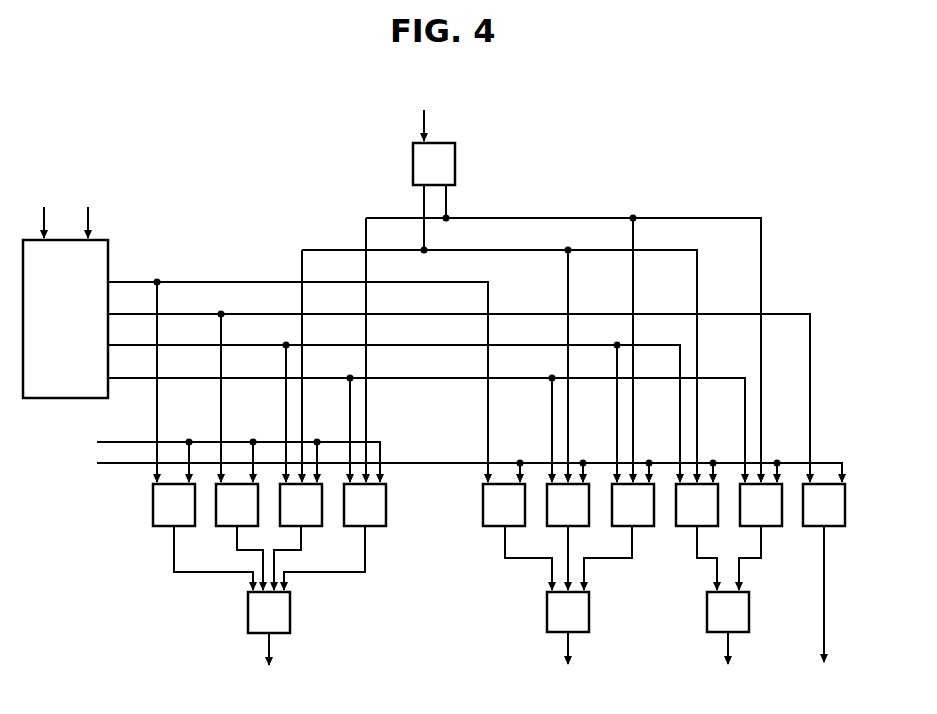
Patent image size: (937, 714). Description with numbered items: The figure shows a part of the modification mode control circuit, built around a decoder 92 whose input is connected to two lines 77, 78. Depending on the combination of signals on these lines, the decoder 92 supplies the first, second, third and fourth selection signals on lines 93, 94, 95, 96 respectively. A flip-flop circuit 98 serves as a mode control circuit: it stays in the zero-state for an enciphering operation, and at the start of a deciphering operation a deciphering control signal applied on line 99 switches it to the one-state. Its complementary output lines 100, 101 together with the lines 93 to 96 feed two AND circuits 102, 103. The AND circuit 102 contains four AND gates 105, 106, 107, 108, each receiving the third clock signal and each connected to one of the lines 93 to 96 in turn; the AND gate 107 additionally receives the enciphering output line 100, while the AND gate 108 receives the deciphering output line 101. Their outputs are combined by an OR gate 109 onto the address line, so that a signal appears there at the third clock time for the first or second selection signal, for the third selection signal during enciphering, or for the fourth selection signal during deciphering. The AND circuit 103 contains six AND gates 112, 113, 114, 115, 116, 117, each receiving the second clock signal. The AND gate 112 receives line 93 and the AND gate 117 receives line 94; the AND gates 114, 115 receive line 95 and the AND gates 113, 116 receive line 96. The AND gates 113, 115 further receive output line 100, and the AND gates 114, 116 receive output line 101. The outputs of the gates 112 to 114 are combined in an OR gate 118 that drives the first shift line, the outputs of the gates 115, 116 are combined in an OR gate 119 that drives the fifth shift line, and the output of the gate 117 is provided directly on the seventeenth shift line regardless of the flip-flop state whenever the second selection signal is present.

The line 77 is at (90, 216).
The line 78 is at (54, 212).
The decoder 92 is at (53, 399).
The line 93 is at (176, 285).
The line 94 is at (176, 317).
The line 95 is at (176, 349).
The line 96 is at (176, 381).
The flip-flop circuit 98 is at (456, 171).
The line 99 is at (426, 127).
The output line 100 is at (343, 249).
The output line 101 is at (519, 223).
The AND circuit 102 is at (138, 508).
The AND circuit 103 is at (850, 493).
The AND gate 105 is at (157, 527).
The AND gate 106 is at (228, 527).
The AND gate 107 is at (313, 527).
The AND gate 108 is at (377, 527).
The OR gate 109 is at (290, 622).
The AND gate 112 is at (515, 527).
The AND gate 113 is at (579, 527).
The AND gate 114 is at (644, 527).
The AND gate 115 is at (708, 527).
The AND gate 116 is at (772, 527).
The AND gate 117 is at (836, 527).
The OR gate 118 is at (589, 622).
The OR gate 119 is at (749, 622).